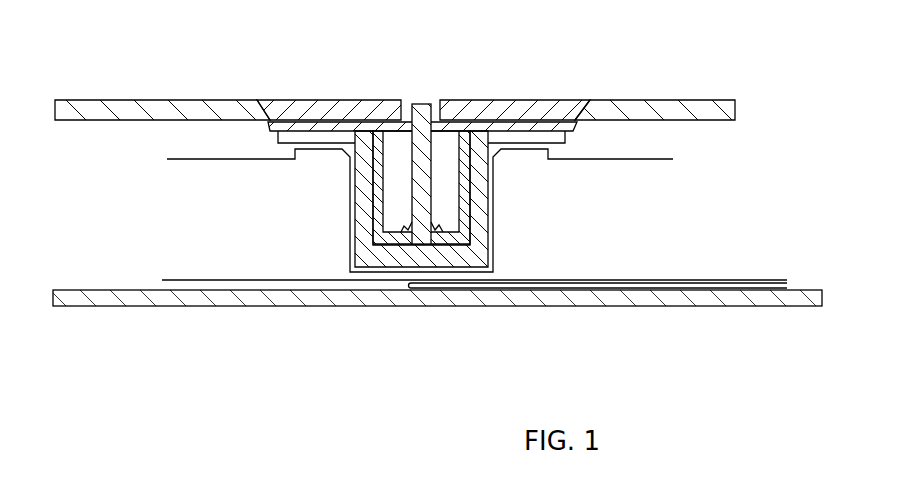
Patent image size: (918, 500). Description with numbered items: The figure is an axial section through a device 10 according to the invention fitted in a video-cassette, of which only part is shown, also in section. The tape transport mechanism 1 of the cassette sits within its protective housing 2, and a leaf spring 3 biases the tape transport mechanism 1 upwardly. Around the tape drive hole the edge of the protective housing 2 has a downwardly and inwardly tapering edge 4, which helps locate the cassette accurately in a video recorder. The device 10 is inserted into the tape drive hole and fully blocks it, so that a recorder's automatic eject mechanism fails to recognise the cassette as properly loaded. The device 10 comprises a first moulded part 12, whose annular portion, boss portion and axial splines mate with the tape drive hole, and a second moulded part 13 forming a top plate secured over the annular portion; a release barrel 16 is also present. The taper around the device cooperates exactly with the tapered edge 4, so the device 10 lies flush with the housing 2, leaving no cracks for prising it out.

The tape transport mechanism 1 is at (305, 375).
The protective housing 2 is at (147, 358).
The leaf spring 3 is at (446, 308).
The tapering edge 4 is at (257, 100).
The device 10 is at (423, 141).
The first moulded part 12 is at (478, 170).
The second moulded part 13 is at (303, 100).
The release barrel 16 is at (464, 218).